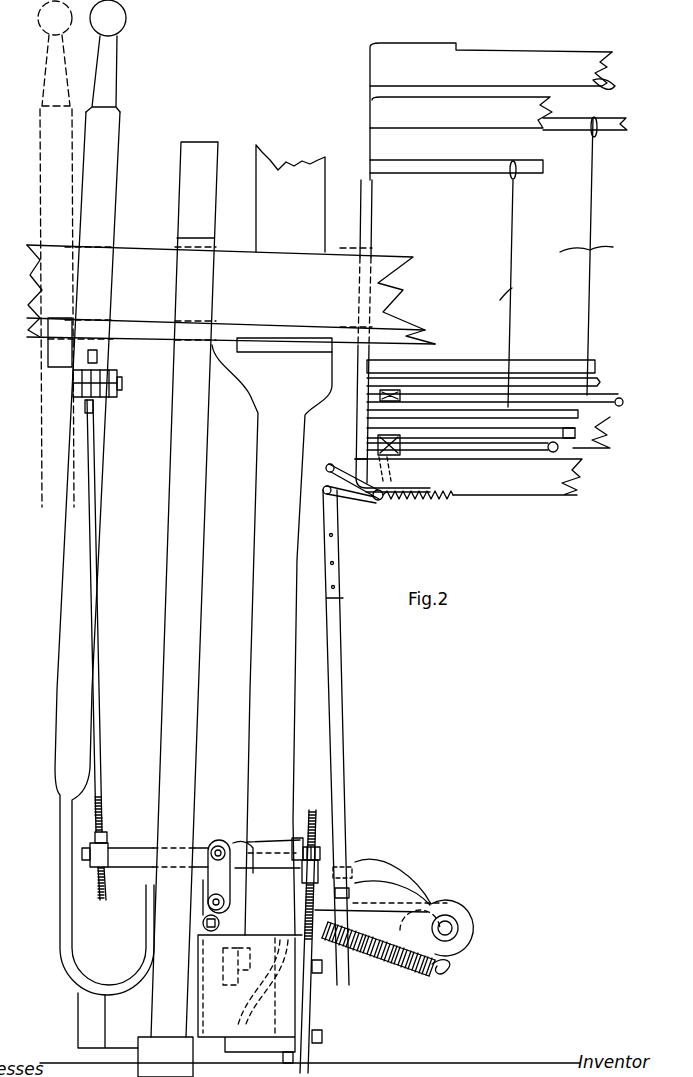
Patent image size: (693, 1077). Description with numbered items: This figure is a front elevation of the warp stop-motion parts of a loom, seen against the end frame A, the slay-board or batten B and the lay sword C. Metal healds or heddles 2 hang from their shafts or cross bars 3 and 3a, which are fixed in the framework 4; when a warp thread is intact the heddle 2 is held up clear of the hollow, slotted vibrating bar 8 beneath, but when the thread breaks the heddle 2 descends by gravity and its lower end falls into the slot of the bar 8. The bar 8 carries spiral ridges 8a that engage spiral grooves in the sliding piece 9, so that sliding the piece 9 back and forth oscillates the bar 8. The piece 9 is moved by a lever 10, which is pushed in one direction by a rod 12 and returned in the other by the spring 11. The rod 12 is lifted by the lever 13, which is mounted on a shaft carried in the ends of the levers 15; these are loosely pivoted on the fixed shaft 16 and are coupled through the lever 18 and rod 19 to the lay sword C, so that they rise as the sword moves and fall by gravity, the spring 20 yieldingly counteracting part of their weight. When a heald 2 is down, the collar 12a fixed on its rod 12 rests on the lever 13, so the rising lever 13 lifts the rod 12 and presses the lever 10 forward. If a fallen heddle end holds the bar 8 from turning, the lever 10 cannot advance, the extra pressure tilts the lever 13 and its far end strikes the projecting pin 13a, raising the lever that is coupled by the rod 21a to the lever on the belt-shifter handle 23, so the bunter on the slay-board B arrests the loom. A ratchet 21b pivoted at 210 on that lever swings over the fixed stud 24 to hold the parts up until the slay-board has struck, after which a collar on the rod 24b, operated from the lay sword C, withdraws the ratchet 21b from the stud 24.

The end frame A is at (172, 557).
The slay-board B is at (231, 244).
The lay sword C is at (265, 695).
The heddle 2 is at (594, 193).
The heddle shaft 3 is at (617, 131).
The heddle shaft 3a is at (597, 367).
The framework 4 is at (612, 90).
The vibrating bar 8 is at (537, 452).
The spiral ridges 8a is at (376, 442).
The sliding piece 9 is at (378, 396).
The lever 10 is at (358, 503).
The spring 11 is at (435, 500).
The rod 12 is at (327, 548).
The collar 12a is at (346, 890).
The lever 13 is at (353, 900).
The projecting pin 13a is at (207, 900).
The lever 15 is at (390, 923).
The fixed shaft 16 is at (449, 933).
The lever 18 is at (308, 1055).
The rod 19 is at (313, 832).
The spring 20 is at (417, 967).
The rod 21a is at (103, 795).
The ratchet 21b is at (238, 843).
The pivot 210 is at (218, 846).
The handle 23 is at (90, 438).
The fixed stud 24 is at (207, 927).
The rod 24b is at (293, 817).